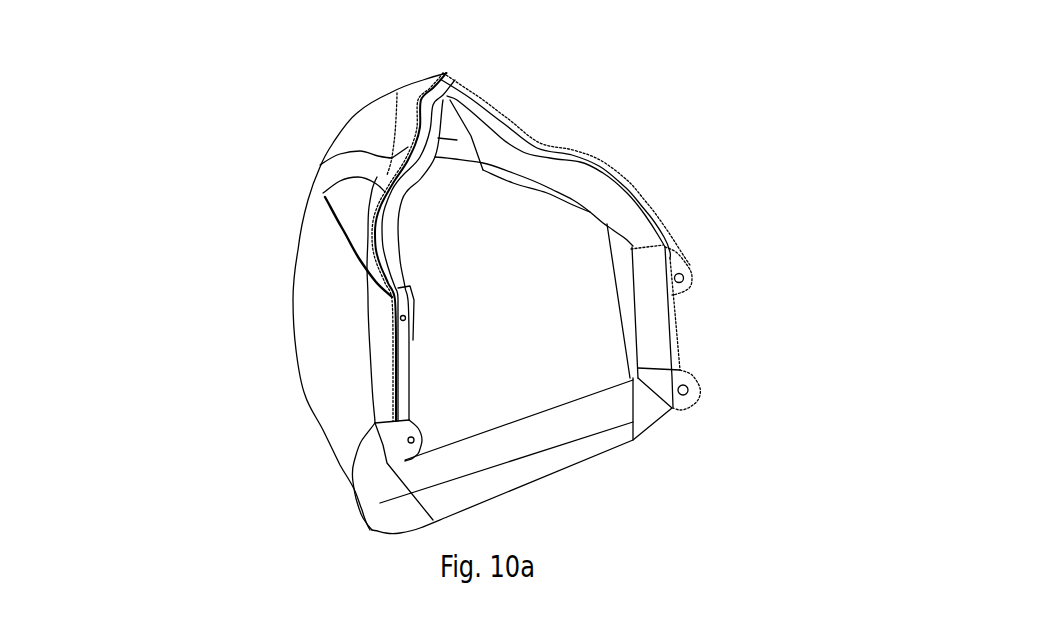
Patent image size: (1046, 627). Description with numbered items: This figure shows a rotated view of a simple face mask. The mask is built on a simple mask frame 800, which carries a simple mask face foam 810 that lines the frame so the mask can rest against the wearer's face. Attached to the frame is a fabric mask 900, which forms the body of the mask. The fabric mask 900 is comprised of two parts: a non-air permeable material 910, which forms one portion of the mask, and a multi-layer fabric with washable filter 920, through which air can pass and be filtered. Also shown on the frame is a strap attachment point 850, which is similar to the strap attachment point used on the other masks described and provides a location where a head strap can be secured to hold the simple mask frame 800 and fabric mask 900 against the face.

The simple mask frame 800 is at (458, 82).
The simple mask face foam 810 is at (553, 172).
The strap attachment point 850 is at (697, 278).
The fabric mask 900 is at (320, 252).
The non-air permeable material 910 is at (357, 132).
The multi-layer fabric with washable filter 920 is at (333, 408).